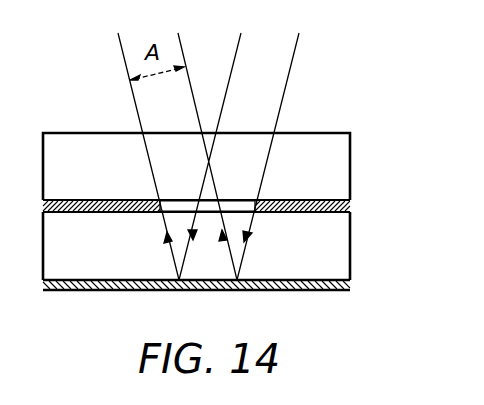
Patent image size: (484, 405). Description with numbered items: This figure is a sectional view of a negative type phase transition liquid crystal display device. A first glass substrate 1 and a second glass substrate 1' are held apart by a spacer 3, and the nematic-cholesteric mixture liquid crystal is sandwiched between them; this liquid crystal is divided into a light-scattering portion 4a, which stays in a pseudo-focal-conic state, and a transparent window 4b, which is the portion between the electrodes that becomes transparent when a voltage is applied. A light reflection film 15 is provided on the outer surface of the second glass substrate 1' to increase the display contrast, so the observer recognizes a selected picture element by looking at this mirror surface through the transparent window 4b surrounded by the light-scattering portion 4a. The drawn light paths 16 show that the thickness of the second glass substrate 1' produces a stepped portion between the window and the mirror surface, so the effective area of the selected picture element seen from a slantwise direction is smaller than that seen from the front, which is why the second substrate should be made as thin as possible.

The first glass substrate 1 is at (222, 153).
The second glass substrate 1' is at (224, 246).
The spacer 3 is at (351, 203).
The light-scattering portion of liquid crystal 4a is at (314, 200).
The transparent window portion of liquid crystal 4b is at (238, 206).
The light reflection film 15 is at (339, 290).
The light rays 16 is at (208, 140).